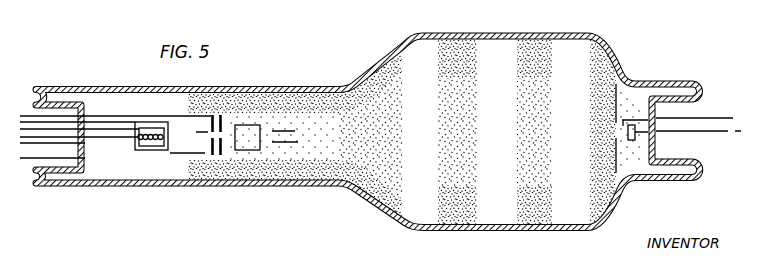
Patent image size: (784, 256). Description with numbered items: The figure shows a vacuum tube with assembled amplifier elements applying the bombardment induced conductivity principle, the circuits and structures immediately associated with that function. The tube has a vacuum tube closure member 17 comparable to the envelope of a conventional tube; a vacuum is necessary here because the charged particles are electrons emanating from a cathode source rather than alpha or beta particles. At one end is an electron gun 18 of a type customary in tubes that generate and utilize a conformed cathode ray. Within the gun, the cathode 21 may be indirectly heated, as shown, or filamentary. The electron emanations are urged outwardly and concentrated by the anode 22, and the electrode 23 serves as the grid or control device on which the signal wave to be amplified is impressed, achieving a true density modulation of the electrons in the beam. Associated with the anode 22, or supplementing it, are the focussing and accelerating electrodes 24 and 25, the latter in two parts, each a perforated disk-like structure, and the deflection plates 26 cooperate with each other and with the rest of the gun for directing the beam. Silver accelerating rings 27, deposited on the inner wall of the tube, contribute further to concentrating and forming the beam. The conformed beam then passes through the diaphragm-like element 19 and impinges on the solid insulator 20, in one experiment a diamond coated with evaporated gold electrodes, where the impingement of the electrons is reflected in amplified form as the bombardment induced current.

The vacuum tube closure member 17 is at (336, 85).
The electron gun 18 is at (187, 137).
The diaphragm-like element 19 is at (633, 80).
The solid insulator 20 is at (637, 138).
The cathode 21 is at (147, 147).
The anode 22 is at (201, 154).
The grid 23 is at (163, 152).
The focussing and accelerating electrode 24 is at (213, 117).
The focussing and accelerating electrode 25 is at (220, 156).
The deflection plates 26 is at (260, 150).
The silver accelerating rings 27 is at (520, 208).